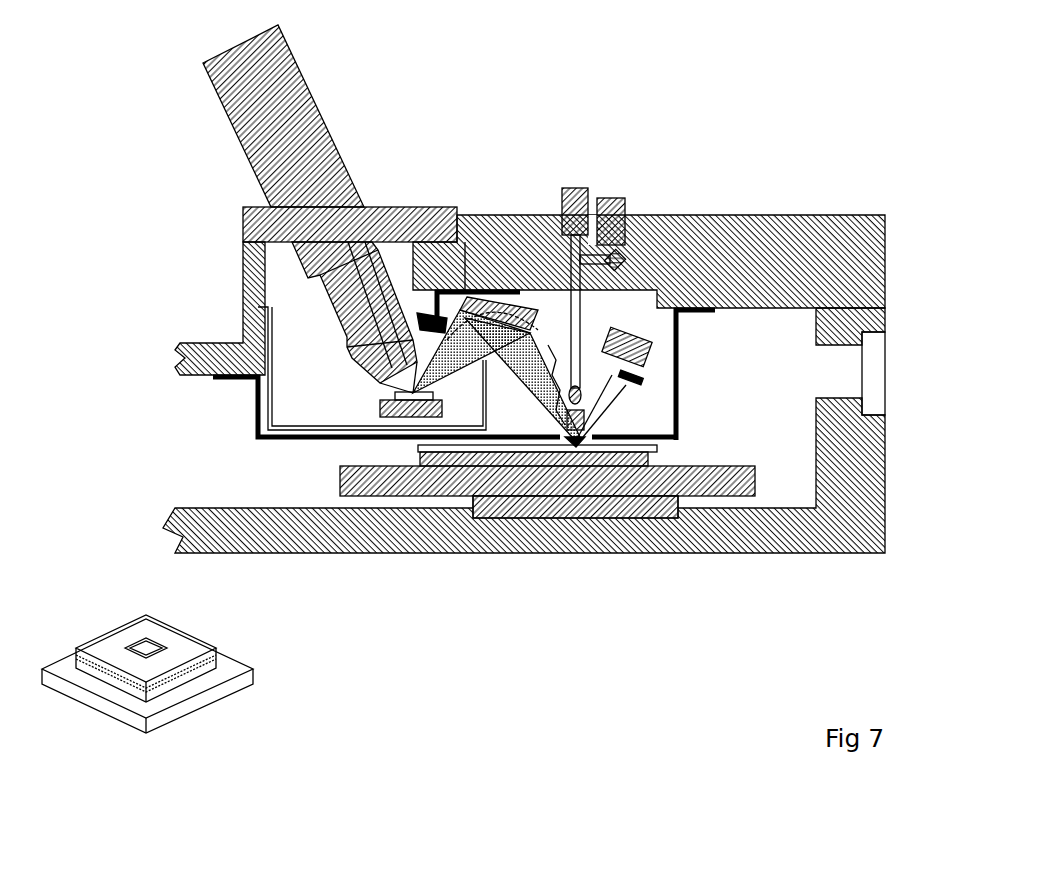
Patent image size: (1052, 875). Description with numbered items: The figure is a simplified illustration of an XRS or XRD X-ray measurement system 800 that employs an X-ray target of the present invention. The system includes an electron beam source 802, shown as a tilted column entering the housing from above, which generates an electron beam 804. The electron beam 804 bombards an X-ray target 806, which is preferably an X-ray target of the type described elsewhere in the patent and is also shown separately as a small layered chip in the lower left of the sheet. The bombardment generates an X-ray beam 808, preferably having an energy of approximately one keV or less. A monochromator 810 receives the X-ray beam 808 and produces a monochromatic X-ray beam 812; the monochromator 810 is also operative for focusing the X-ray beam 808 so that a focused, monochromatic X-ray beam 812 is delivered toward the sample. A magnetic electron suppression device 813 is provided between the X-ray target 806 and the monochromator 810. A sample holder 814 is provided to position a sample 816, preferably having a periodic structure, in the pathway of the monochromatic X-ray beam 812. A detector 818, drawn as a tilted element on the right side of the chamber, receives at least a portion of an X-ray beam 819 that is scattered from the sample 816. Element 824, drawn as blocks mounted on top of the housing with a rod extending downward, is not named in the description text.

The X-ray measurement system 800 is at (833, 190).
The electron beam source 802 is at (385, 290).
The electron beam 804 is at (400, 388).
The X-ray target 806 is at (410, 397).
The X-ray beam 808 is at (498, 297).
The monochromator 810 is at (522, 300).
The monochromatic X-ray beam 812 is at (560, 440).
The magnetic electron suppression device 813 is at (458, 296).
The sample holder 814 is at (458, 462).
The sample 816 is at (613, 453).
The detector 818 is at (635, 330).
The scattered X-ray beam 819 is at (605, 390).
The actuator 824 is at (577, 188).